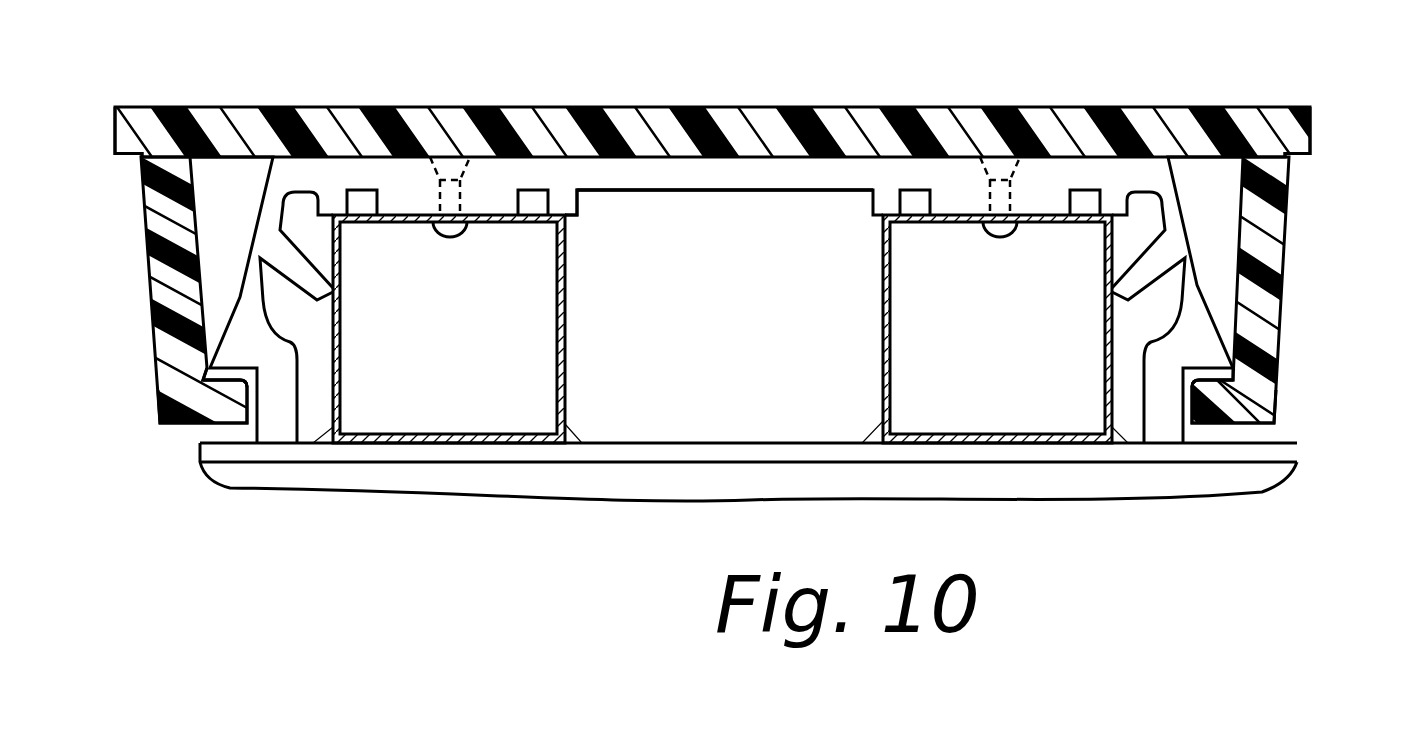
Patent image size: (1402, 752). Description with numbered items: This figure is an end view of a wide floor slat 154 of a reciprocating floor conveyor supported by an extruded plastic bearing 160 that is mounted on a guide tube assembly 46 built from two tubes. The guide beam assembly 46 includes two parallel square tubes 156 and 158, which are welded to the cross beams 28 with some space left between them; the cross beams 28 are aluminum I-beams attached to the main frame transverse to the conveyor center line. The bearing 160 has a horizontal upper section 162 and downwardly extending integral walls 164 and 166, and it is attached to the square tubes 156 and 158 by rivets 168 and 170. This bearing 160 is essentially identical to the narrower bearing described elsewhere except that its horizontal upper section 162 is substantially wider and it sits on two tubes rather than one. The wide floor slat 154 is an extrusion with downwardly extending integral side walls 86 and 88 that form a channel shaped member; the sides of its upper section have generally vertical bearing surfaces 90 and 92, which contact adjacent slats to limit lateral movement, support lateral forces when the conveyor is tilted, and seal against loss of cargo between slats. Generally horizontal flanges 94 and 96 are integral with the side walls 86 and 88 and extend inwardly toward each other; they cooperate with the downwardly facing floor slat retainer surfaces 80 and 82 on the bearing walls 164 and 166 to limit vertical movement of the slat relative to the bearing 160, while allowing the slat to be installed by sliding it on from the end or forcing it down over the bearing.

The cross beams 28 is at (425, 482).
The guide beam assembly 46 is at (600, 220).
The floor slat retainer surface 80 is at (205, 378).
The floor slat retainer surface 82 is at (1233, 377).
The side wall 86 is at (160, 270).
The side wall 88 is at (1270, 217).
The vertical bearing surface 90 is at (112, 110).
The vertical bearing surface 92 is at (1313, 108).
The horizontal flange 94 is at (217, 413).
The horizontal flange 96 is at (1216, 420).
The wide floor slat 154 is at (515, 108).
The square tube 156 is at (567, 348).
The square tube 158 is at (883, 358).
The bearing 160 is at (820, 195).
The horizontal upper section 162 is at (717, 184).
The downwardly extending integral wall 164 is at (266, 222).
The downwardly extending integral wall 166 is at (1187, 282).
The rivet 168 is at (452, 237).
The rivet 170 is at (1000, 237).